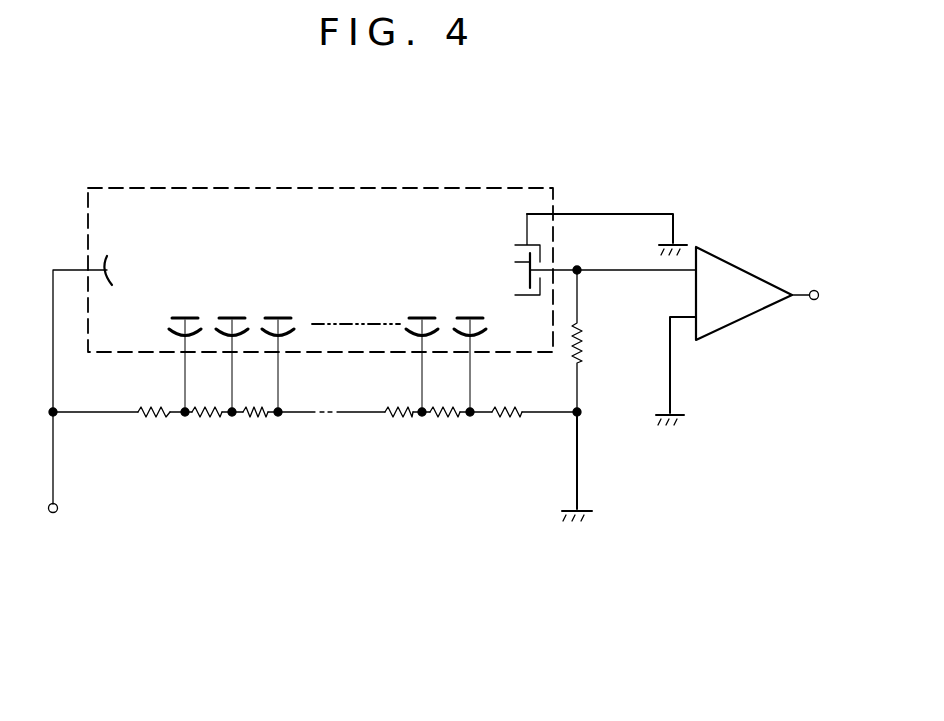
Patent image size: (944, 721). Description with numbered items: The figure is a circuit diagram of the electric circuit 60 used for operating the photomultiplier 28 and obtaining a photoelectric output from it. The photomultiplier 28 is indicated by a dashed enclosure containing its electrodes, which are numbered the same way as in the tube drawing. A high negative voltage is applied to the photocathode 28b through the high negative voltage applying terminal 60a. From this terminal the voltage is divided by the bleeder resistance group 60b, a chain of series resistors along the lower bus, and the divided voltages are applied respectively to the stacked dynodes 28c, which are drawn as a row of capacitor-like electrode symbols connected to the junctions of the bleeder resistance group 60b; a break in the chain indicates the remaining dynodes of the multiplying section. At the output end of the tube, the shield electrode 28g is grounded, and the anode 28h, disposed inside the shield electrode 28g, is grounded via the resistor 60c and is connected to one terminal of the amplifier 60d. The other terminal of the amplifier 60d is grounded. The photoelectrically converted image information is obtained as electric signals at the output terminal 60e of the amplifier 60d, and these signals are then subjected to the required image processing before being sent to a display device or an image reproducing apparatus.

The photomultiplier 28 is at (160, 187).
The photocathode 28b is at (117, 258).
The dynodes 28c is at (278, 316).
The shield electrode 28g is at (543, 256).
The anode 28h is at (515, 262).
The electric circuit 60 is at (683, 578).
The high negative voltage applying terminal 60a is at (53, 513).
The bleeder resistance group 60b is at (137, 437).
The resistor 60c is at (585, 341).
The amplifier 60d is at (742, 268).
The output terminal 60e is at (814, 290).